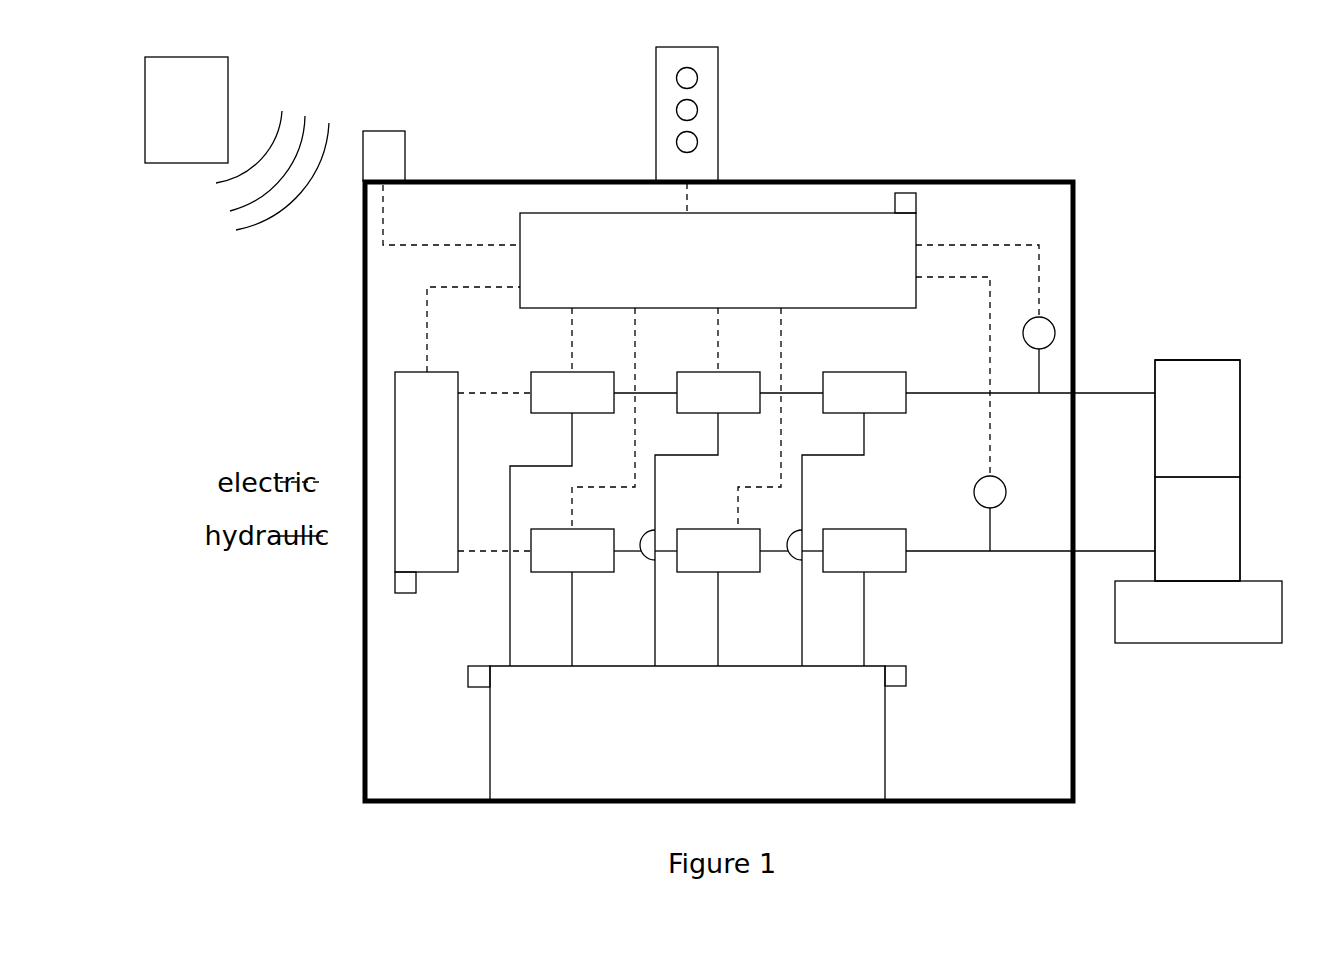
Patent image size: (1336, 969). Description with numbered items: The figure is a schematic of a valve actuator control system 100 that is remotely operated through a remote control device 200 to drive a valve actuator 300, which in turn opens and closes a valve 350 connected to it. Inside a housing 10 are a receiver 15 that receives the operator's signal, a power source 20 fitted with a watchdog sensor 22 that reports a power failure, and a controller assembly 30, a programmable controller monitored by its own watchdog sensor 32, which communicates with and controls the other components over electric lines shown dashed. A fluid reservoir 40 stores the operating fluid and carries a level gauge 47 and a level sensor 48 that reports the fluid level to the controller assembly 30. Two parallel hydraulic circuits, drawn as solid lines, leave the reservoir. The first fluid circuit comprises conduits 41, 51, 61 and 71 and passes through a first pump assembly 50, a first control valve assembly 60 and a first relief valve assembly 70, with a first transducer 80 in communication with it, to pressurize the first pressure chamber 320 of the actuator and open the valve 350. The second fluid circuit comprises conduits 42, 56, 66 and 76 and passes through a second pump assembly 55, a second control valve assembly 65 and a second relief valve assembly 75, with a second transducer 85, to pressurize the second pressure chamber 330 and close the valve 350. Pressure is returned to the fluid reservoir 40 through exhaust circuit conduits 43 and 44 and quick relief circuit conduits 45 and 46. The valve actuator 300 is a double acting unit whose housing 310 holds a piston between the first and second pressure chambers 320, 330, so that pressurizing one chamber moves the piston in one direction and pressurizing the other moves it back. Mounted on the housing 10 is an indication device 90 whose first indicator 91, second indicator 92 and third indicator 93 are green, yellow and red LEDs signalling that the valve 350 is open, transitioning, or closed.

The housing 10 is at (1023, 180).
The receiver 15 is at (405, 150).
The power source 20 is at (426, 472).
The watchdog sensor 22 is at (403, 593).
The controller assembly 30 is at (718, 260).
The watchdog sensor 32 is at (918, 202).
The fluid reservoir 40 is at (687, 733).
The conduit 41 is at (508, 645).
The conduit 42 is at (571, 645).
The conduit 43 is at (653, 645).
The conduit 44 is at (717, 645).
The conduit 45 is at (802, 645).
The conduit 46 is at (863, 645).
The level gauge 47 is at (907, 677).
The level sensor 48 is at (470, 688).
The first pump assembly 50 is at (572, 392).
The conduit 51 is at (645, 390).
The second pump assembly 55 is at (572, 550).
The conduit 56 is at (667, 547).
The first control valve assembly 60 is at (718, 392).
The conduit 61 is at (802, 390).
The second control valve assembly 65 is at (718, 550).
The conduit 66 is at (813, 547).
The first relief valve assembly 70 is at (864, 392).
The conduit 71 is at (937, 393).
The second relief valve assembly 75 is at (864, 550).
The conduit 76 is at (957, 550).
The first transducer 80 is at (1054, 330).
The second transducer 85 is at (1006, 487).
The indication device 90 is at (720, 138).
The first indicator 91 is at (676, 77).
The second indicator 92 is at (676, 110).
The third indicator 93 is at (676, 143).
The valve actuator control system 100 is at (1137, 190).
The remote control device 200 is at (197, 165).
The valve actuator 300 is at (1250, 348).
The housing 310 is at (1187, 360).
The first pressure chamber 320 is at (1218, 433).
The second pressure chamber 330 is at (1218, 538).
The valve 350 is at (1198, 625).